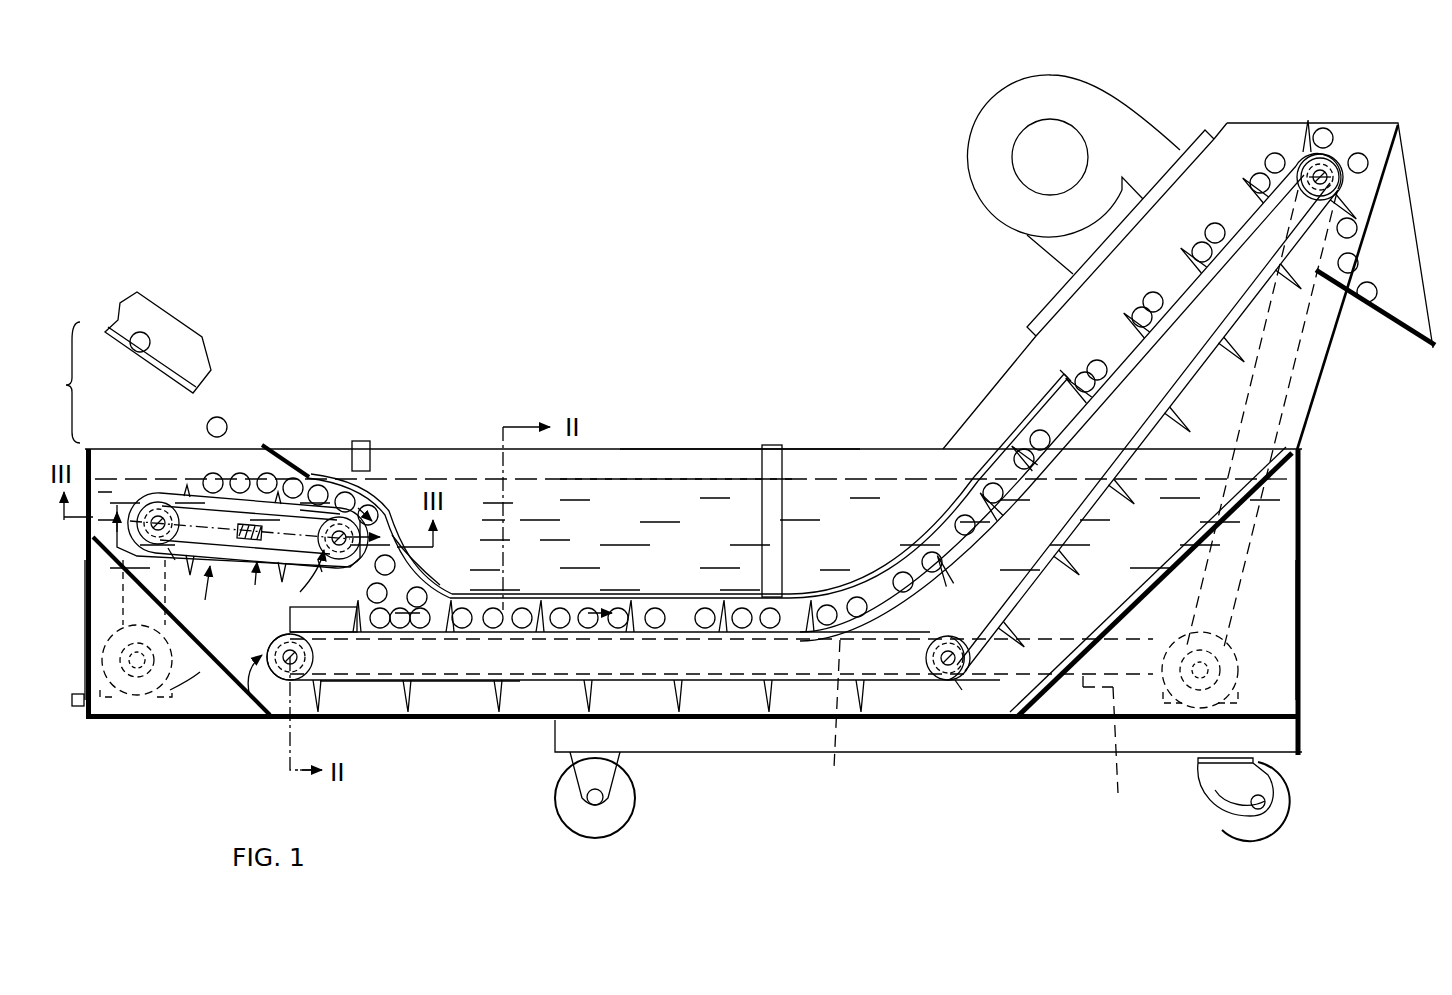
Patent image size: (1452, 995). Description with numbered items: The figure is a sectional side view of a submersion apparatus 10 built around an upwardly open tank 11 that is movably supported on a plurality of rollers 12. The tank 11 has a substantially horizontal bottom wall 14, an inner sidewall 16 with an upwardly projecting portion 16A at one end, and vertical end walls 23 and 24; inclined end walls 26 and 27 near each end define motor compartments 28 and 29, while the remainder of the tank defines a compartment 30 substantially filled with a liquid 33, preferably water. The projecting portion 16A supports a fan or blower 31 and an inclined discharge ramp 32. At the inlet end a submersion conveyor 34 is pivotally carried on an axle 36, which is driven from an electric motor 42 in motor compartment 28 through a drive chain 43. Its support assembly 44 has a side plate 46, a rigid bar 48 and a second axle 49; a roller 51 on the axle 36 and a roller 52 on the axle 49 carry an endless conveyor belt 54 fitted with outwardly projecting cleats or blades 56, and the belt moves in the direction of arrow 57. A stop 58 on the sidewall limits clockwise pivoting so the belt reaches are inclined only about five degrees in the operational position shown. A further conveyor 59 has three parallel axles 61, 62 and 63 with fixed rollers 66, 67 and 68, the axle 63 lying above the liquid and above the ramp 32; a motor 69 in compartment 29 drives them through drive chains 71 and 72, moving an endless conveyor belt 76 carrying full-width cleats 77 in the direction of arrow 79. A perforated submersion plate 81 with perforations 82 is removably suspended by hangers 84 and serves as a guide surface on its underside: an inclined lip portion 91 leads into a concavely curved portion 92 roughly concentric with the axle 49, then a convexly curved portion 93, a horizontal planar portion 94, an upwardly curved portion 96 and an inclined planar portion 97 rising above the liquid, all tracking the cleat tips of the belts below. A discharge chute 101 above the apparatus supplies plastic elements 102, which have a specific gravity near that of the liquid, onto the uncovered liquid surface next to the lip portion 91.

The submersion apparatus 10 is at (665, 226).
The tank 11 is at (1306, 546).
The rollers 12 is at (636, 809).
The bottom wall 14 is at (522, 722).
The inner sidewall 16 is at (741, 462).
The upwardly projecting portion of inner sidewall 16A is at (1057, 355).
The vertical end wall 23 is at (92, 635).
The vertical end wall 24 is at (1302, 617).
The inclined end wall 26 is at (225, 690).
The inclined end wall 27 is at (1052, 705).
The motor compartment 28 is at (192, 682).
The motor compartment 29 is at (1077, 705).
The compartment 30 is at (705, 447).
The fan or blower 31 is at (985, 116).
The inclined discharge ramp 32 is at (1416, 349).
The liquid 33 is at (672, 500).
The submersion conveyor 34 is at (216, 513).
The axle 36 is at (148, 503).
The electric motor 42 is at (100, 689).
The drive chain 43 is at (100, 655).
The support assembly 44 is at (200, 596).
The side plate 46 is at (122, 504).
The bar 48 is at (249, 541).
The axle 49 is at (300, 575).
The cylindrical roller 51 is at (174, 560).
The cylindrical roller 52 is at (342, 561).
The endless conveyor belt 54 is at (167, 500).
The cleats or blades 56 is at (178, 500).
The arrow 57 is at (118, 555).
The stop 58 is at (318, 562).
The conveyor 59 is at (813, 438).
The axle 61 is at (282, 680).
The axle 62 is at (943, 674).
The axle 63 is at (1334, 155).
The cylindrical roller 66 is at (297, 682).
The cylindrical roller 67 is at (962, 680).
The cylindrical roller 68 is at (1311, 174).
The motor 69 is at (1238, 676).
The drive chain 71 is at (978, 720).
The drive chain 72 is at (1293, 368).
The endless conveyor belt 76 is at (430, 690).
The cleats 77 is at (497, 688).
The arrow 79 is at (250, 700).
The submersion plate 81 is at (1008, 436).
The perforations 82 is at (1048, 408).
The hangers 84 is at (374, 453).
The planar portion 91 is at (290, 468).
The concavely curved portion 92 is at (365, 493).
The convexly curved portion 93 is at (428, 582).
The planar horizontal portion 94 is at (634, 596).
The upwardly curved portion 96 is at (878, 582).
The planar inclined portion 97 is at (966, 496).
The discharge chute 101 is at (165, 311).
The plastic elements 102 is at (150, 340).